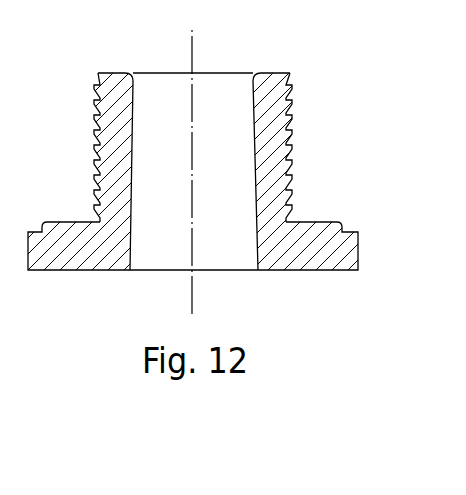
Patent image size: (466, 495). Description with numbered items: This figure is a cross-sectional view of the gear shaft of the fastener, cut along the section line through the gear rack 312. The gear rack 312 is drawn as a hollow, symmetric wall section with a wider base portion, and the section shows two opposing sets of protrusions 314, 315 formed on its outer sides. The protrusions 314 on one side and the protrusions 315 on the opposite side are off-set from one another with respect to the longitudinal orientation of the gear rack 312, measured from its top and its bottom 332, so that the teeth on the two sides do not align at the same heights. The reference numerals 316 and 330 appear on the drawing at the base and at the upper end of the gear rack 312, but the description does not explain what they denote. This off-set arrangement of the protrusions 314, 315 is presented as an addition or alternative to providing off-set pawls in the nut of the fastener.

The gear rack 312 is at (273, 79).
The protrusions 314 is at (289, 145).
The protrusions 315 is at (98, 130).
The flange 316 is at (343, 259).
The upper end of tubular wall 330 is at (100, 75).
The bottom 332 is at (113, 266).